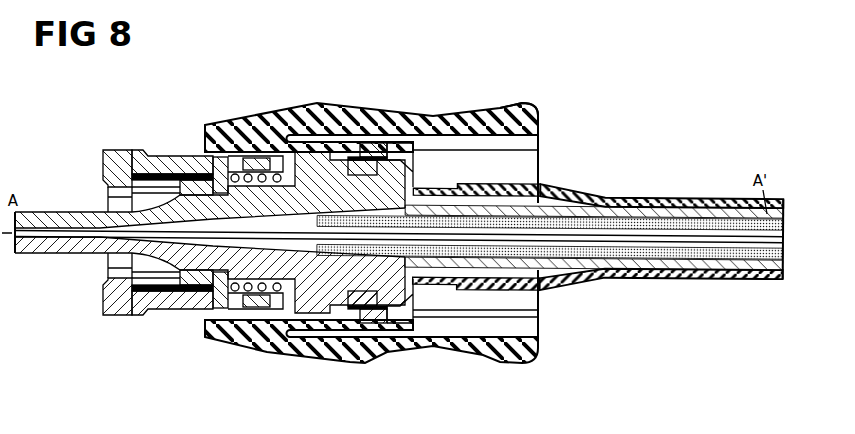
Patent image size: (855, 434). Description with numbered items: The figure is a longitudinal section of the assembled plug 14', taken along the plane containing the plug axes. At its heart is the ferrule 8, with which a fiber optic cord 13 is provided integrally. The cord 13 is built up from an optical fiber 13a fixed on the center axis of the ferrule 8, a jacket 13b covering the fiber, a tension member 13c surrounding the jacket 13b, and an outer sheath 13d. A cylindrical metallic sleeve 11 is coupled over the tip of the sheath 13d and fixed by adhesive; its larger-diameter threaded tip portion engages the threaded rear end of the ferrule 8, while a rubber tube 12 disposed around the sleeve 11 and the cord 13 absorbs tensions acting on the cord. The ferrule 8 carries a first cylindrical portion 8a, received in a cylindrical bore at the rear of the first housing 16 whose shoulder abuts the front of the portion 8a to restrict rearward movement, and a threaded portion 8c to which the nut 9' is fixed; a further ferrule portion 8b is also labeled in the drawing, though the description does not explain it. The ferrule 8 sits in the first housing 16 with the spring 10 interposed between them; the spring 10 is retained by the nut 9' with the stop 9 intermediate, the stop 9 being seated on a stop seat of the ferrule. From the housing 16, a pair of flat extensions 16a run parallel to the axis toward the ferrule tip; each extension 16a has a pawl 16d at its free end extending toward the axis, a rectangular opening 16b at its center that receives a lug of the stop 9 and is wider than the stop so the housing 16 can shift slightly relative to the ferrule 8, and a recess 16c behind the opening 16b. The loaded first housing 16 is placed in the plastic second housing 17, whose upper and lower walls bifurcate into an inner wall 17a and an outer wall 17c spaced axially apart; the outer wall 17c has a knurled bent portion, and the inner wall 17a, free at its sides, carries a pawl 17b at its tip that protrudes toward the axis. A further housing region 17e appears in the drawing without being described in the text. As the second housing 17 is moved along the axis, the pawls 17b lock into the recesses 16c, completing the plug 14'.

The ferrule 8 is at (46, 198).
The first cylindrical portion 8a is at (347, 168).
The spring seat 8b is at (272, 168).
The threaded portion 8c is at (193, 155).
The stop 9 is at (172, 291).
The nut 9' is at (179, 266).
The spring 10 is at (278, 300).
The metallic sleeve 11 is at (519, 184).
The rubber tube 12 is at (606, 197).
The fiber optic cord 13 is at (671, 215).
The optical fiber 13a is at (42, 244).
The jacket 13b is at (615, 250).
The tension member 13c is at (671, 255).
The sheath 13d is at (717, 262).
The plug 14' is at (399, 325).
The first housing 16 is at (300, 152).
The flat extensions 16a is at (158, 152).
The rectangular opening 16b is at (228, 153).
The recesses 16c is at (248, 158).
The pawl 16d is at (103, 181).
The second housing 17 is at (325, 97).
The inner wall 17a is at (378, 157).
The pawl 17b is at (387, 157).
The outer wall 17c is at (480, 113).
The housing inner chamber 17e is at (446, 145).